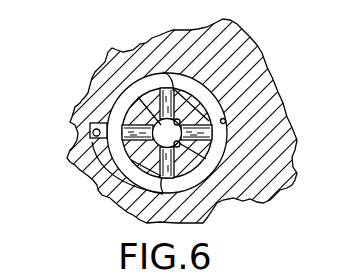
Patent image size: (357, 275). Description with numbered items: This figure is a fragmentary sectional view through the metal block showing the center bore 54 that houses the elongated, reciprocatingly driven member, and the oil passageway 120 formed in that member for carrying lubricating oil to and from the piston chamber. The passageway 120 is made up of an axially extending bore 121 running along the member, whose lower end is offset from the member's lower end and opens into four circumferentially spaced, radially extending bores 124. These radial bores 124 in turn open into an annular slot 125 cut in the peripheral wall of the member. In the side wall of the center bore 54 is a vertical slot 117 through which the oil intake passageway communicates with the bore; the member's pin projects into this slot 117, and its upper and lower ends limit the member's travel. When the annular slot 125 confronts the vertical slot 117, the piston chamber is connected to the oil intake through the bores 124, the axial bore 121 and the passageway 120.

The center bore 54 is at (226, 120).
The vertical slot 117 is at (88, 142).
The passageway 120 is at (212, 93).
The axially extending bore 121 is at (205, 150).
The radially extending bores 124 is at (162, 72).
The annular slot 125 is at (103, 188).